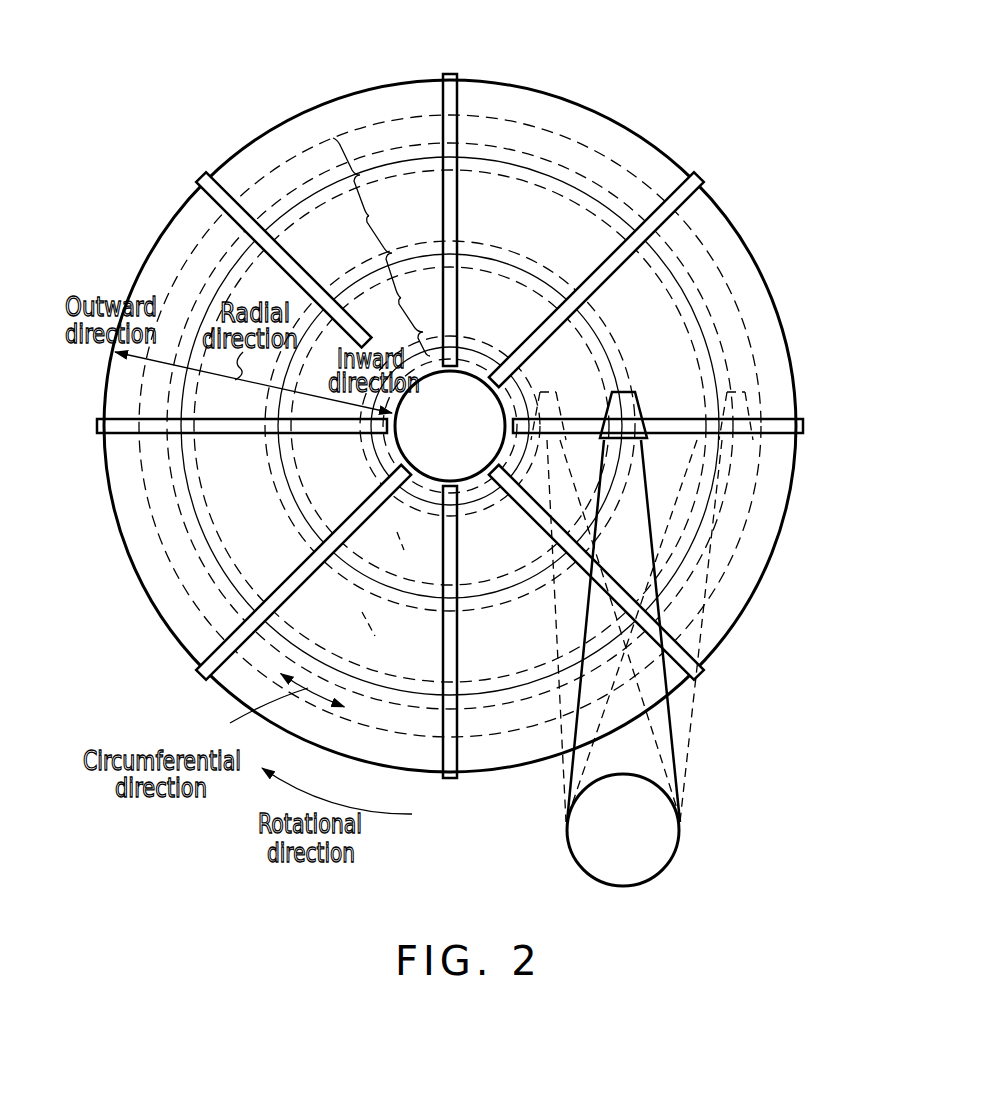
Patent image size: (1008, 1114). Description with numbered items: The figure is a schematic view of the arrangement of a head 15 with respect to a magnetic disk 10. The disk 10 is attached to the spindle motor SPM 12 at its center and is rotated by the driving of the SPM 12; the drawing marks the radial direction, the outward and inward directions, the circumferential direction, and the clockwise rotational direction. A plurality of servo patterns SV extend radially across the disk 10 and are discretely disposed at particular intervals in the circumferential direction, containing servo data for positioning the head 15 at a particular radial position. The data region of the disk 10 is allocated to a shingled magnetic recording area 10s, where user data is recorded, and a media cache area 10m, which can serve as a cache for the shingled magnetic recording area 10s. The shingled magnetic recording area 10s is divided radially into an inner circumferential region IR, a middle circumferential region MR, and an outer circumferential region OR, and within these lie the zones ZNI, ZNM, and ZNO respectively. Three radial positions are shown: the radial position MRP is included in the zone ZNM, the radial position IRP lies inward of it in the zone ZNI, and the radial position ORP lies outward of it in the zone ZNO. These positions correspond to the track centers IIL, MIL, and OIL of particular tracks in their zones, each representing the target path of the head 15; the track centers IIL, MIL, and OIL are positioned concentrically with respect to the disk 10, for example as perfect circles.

The magnetic disk 10 is at (440, 426).
The media cache area 10m is at (146, 548).
The shingled magnetic recording area 10s is at (160, 502).
The spindle motor 12 is at (468, 472).
The head 15 is at (608, 392).
The servo pattern SV is at (450, 74).
The spindle motor SPM is at (450, 427).
The outer circumferential region OR is at (367, 177).
The middle circumferential region MR is at (402, 257).
The inner circumferential region IR is at (426, 327).
The track center OIL is at (558, 178).
The track center MIL is at (505, 258).
The track center IIL is at (476, 350).
The zone ZNO is at (689, 256).
The zone ZNM is at (633, 391).
The zone ZNI is at (359, 459).
The radial position ORP is at (748, 389).
The radial position MRP is at (619, 390).
The radial position IRP is at (547, 390).